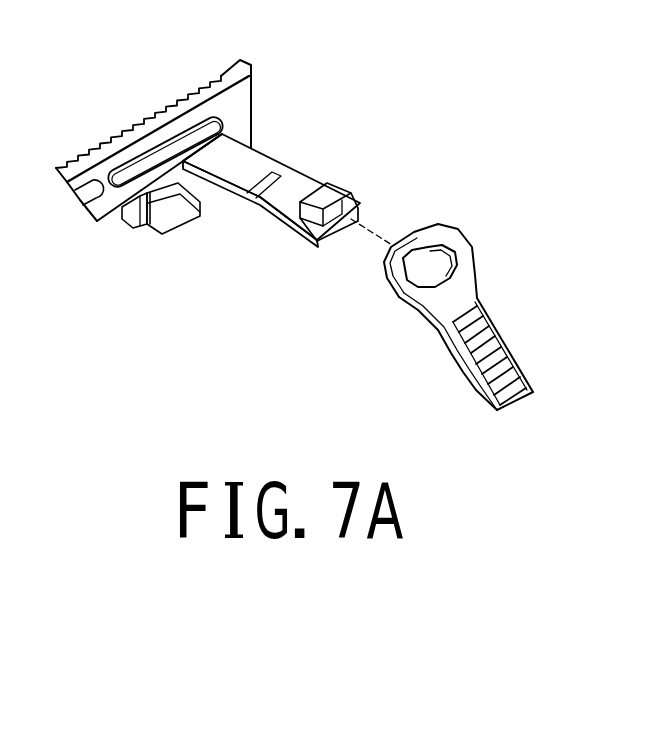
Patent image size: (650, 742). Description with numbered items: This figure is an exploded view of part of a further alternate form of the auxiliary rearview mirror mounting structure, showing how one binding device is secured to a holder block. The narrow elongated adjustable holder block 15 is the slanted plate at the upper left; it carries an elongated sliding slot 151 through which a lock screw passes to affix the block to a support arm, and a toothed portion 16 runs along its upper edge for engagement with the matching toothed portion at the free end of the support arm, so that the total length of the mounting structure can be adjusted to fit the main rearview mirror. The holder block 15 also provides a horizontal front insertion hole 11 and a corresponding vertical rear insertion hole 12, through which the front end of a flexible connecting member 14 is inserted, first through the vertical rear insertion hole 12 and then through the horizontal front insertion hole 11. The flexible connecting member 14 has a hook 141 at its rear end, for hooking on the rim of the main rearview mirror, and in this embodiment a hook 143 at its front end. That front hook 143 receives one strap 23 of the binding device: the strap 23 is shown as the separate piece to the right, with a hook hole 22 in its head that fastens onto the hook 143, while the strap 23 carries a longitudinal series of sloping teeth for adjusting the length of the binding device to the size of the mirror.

The horizontal front insertion hole 11 is at (232, 133).
The vertical rear insertion hole 12 is at (155, 200).
The flexible connecting member 14 is at (250, 155).
The holder block 15 is at (247, 104).
The toothed portion 16 is at (113, 128).
The hook hole 22 is at (441, 259).
The strap 23 is at (464, 305).
The hook 141 is at (178, 213).
The hook 143 is at (340, 188).
The elongated sliding slot 151 is at (165, 152).